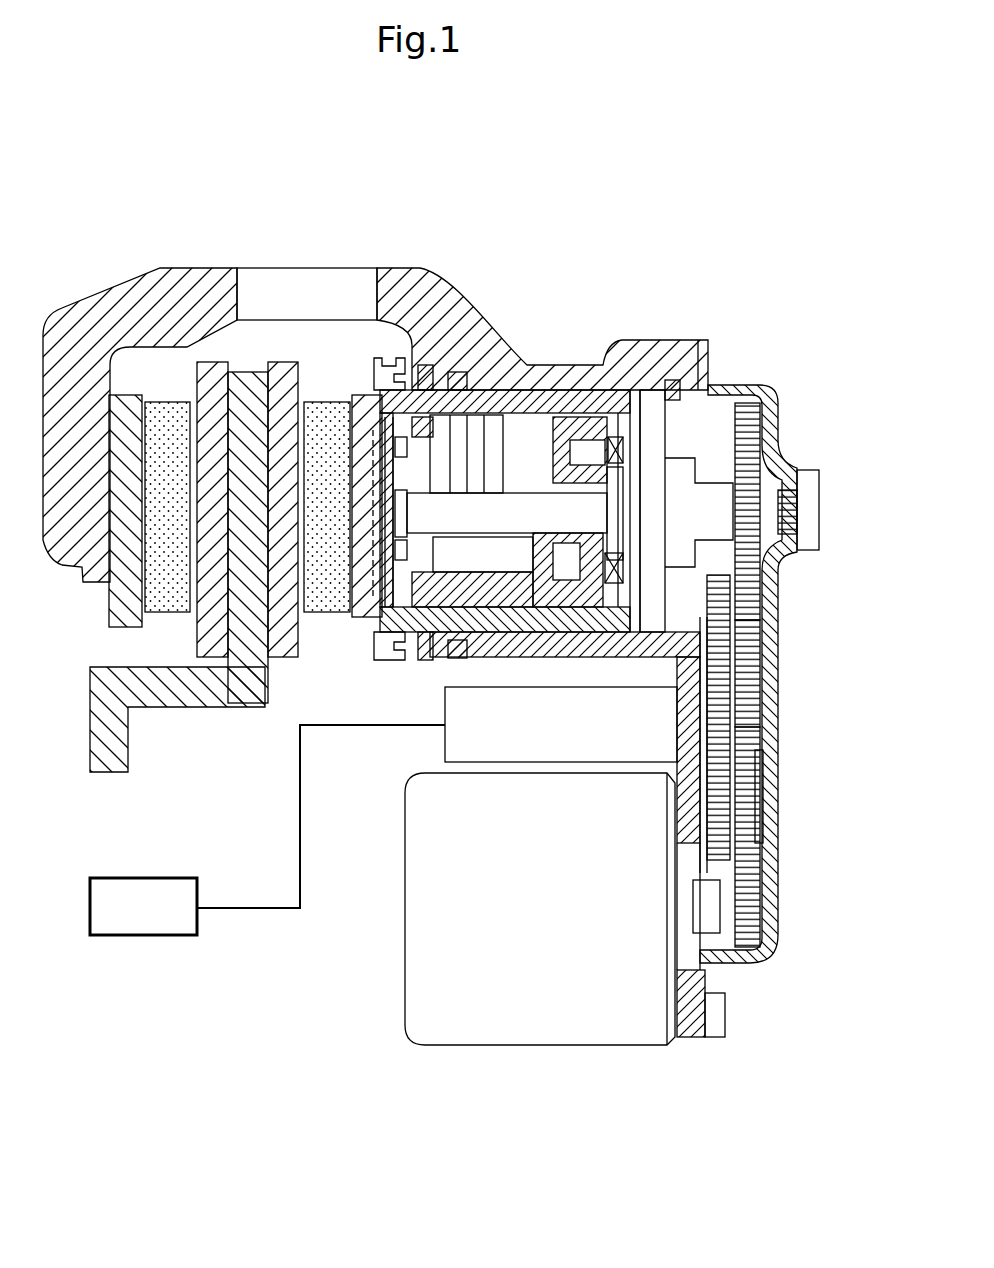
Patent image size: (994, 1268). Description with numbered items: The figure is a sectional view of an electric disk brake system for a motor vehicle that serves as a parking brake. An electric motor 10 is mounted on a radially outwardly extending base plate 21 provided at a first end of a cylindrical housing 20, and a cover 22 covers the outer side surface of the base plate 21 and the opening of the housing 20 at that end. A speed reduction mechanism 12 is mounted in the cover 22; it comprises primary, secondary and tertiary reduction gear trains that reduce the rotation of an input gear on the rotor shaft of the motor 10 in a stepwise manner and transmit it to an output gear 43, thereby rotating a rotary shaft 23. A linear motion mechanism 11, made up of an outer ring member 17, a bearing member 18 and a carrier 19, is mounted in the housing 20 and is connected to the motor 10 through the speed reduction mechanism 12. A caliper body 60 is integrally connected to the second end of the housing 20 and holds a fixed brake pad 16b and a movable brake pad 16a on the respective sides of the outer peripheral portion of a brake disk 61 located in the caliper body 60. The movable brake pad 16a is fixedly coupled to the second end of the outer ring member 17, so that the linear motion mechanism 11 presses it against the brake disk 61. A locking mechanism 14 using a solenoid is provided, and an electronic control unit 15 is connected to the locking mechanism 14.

The caliper body 60 is at (190, 275).
The brake disk 61 is at (215, 705).
The movable brake pad 16a is at (333, 420).
The fixed brake pad 16b is at (165, 420).
The outer ring member 17 is at (520, 390).
The bearing member 18 is at (653, 400).
The linear motion mechanism 11 is at (725, 352).
The output gear 43 is at (750, 410).
The cover 22 is at (780, 447).
The rotary shaft 23 is at (517, 524).
The carrier 19 is at (400, 594).
The locking mechanism 14 is at (436, 708).
The cylindrical housing 20 is at (585, 657).
The speed reduction mechanism 12 is at (768, 733).
The electric motor 10 is at (580, 1027).
The base plate 21 is at (690, 1040).
The electronic control unit 15 is at (108, 938).